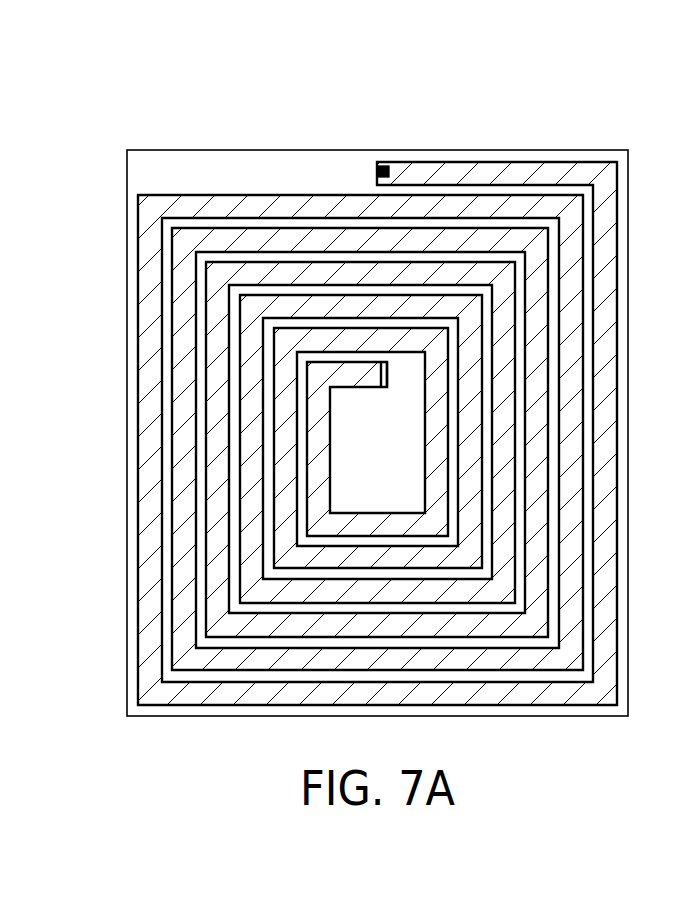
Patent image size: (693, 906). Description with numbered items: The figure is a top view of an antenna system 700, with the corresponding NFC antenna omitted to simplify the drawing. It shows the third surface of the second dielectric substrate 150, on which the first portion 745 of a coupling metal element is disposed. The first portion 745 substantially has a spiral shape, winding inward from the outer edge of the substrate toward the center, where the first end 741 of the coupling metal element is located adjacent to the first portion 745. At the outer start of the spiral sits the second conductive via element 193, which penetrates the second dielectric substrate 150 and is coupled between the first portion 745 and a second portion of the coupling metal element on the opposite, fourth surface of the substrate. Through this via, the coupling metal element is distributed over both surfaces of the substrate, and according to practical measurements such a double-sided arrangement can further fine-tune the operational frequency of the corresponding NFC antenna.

The antenna system 700 is at (165, 48).
The second dielectric substrate 150 is at (236, 166).
The second conductive via element 193 is at (384, 163).
The first portion 745 is at (146, 432).
The first end 741 is at (389, 375).